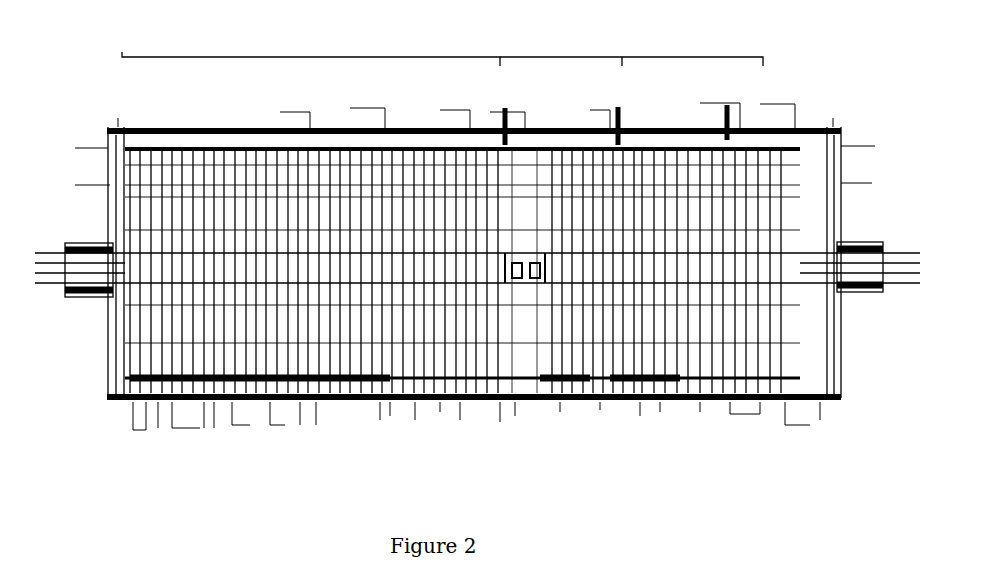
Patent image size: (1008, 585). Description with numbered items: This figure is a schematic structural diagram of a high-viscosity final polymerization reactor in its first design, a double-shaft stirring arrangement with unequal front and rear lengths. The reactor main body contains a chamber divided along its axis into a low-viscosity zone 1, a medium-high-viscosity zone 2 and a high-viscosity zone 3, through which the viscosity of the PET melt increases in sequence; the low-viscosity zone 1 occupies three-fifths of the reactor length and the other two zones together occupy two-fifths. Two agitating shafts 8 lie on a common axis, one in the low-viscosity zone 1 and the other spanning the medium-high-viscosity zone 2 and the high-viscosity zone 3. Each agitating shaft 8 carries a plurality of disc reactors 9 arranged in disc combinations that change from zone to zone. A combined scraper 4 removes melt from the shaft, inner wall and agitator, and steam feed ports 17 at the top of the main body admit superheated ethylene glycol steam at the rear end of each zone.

The low-viscosity zone 1 is at (311, 57).
The medium-high-viscosity zone 2 is at (560, 57).
The high-viscosity zone 3 is at (697, 57).
The combined scraper 4 is at (683, 388).
The agitating shaft 8 is at (120, 287).
The disc reactor 9 is at (200, 177).
The steam feed port 17 is at (505, 122).